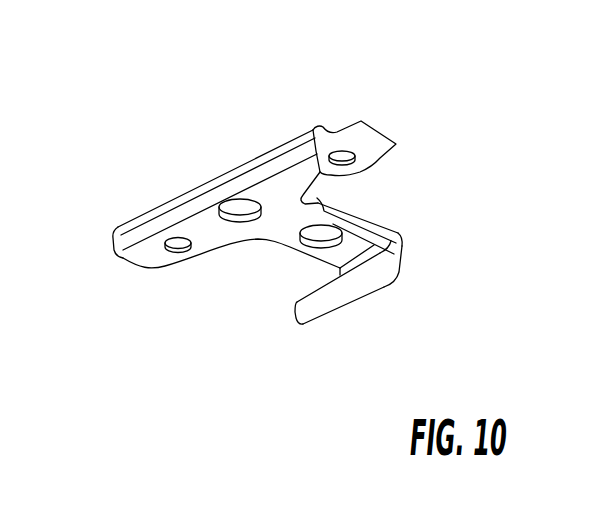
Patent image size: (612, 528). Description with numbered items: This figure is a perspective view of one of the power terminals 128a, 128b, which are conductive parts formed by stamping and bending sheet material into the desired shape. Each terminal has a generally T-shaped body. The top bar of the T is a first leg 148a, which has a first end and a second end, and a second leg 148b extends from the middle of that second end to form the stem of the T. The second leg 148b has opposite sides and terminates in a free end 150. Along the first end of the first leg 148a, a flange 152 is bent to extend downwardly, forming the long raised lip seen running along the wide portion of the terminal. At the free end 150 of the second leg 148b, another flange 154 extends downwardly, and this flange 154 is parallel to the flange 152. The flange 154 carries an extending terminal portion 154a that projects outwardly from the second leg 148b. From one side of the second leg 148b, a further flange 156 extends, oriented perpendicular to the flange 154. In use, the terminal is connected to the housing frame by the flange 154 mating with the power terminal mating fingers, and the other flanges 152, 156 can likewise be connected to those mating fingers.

The power terminal 128a is at (275, 217).
The power terminal 128b is at (275, 217).
The flange 152 is at (170, 218).
The first leg 148a is at (322, 176).
The second leg 148b is at (323, 255).
The flange 156 is at (372, 232).
The free end 150 is at (362, 258).
The flange 154 is at (317, 321).
The extending terminal portion 154a is at (305, 325).